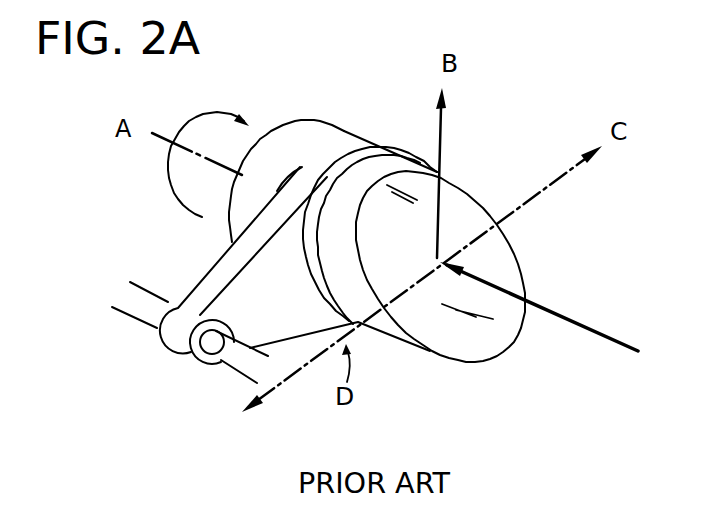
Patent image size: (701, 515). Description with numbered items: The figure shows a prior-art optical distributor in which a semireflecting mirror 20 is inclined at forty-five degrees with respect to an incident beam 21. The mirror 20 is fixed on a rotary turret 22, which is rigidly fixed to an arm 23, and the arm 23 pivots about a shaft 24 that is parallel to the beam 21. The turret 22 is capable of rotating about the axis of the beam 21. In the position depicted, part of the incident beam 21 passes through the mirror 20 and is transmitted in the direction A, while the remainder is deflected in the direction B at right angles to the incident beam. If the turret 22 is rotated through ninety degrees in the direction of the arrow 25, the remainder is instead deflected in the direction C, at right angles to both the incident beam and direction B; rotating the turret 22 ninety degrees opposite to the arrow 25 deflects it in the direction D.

The semireflecting mirror 20 is at (483, 342).
The incident beam 21 is at (614, 336).
The rotary turret 22 is at (307, 133).
The arm 23 is at (207, 272).
The shaft 24 is at (143, 307).
The arrow 25 is at (172, 187).